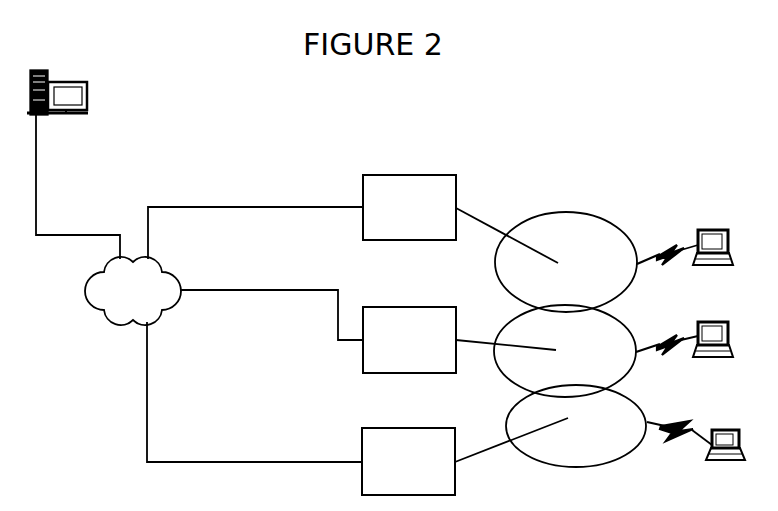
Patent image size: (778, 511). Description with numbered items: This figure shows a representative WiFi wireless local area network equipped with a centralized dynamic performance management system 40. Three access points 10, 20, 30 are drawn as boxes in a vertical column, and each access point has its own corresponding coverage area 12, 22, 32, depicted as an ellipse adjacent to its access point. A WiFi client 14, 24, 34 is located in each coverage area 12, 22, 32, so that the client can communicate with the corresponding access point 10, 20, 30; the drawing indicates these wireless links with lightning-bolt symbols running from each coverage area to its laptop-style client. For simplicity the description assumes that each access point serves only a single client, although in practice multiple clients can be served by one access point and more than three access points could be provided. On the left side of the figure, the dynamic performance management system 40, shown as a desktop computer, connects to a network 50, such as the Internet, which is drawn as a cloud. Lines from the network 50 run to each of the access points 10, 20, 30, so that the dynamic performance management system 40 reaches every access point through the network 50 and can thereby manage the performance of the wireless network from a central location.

The access point 10 is at (409, 207).
The coverage area 12 is at (566, 262).
The WiFi client 14 is at (713, 254).
The access point 20 is at (409, 340).
The coverage area 22 is at (565, 351).
The WiFi client 24 is at (713, 346).
The access point 30 is at (408, 461).
The coverage area 32 is at (576, 426).
The WiFi client 34 is at (725, 452).
The dynamic performance management system 40 is at (57, 99).
The network 50 is at (133, 291).